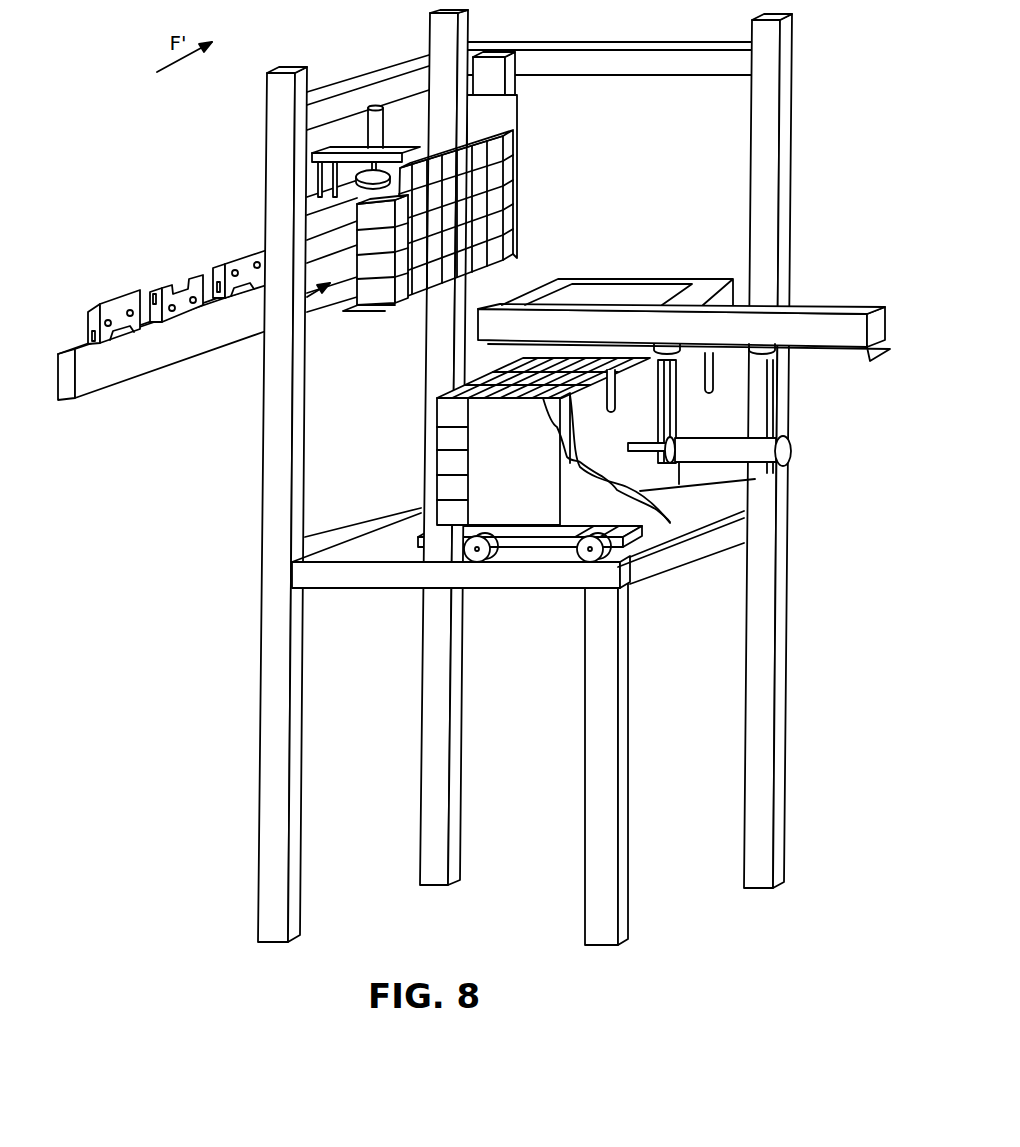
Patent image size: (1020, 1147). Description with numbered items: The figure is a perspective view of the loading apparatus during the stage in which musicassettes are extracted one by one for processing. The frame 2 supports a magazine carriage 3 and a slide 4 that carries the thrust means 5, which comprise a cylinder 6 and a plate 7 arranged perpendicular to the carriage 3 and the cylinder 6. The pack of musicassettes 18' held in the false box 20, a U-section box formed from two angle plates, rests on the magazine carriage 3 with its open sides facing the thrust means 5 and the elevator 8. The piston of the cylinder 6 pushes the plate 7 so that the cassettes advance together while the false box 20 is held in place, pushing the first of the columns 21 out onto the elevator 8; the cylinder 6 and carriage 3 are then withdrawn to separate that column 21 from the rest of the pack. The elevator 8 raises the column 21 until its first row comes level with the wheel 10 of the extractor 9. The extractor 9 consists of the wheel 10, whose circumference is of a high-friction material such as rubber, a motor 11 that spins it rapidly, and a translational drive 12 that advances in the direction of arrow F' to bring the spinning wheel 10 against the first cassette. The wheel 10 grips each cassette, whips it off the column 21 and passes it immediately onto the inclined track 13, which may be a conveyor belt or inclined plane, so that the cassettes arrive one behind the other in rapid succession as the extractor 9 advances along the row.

The frame 2 is at (438, 675).
The magazine carriage 3 is at (522, 547).
The slide 4 is at (652, 299).
The thrust means 5 is at (684, 377).
The cylinder 6 is at (729, 454).
The plate 7 is at (677, 417).
The elevator 8 is at (370, 311).
The extractor 9 is at (300, 130).
The wheel 10 is at (350, 198).
The motor 11 is at (365, 118).
The translational drive 12 is at (310, 163).
The inclined track 13 is at (150, 363).
The musicassettes 18' is at (176, 265).
The false box 20 is at (487, 502).
The columns 21 is at (266, 303).